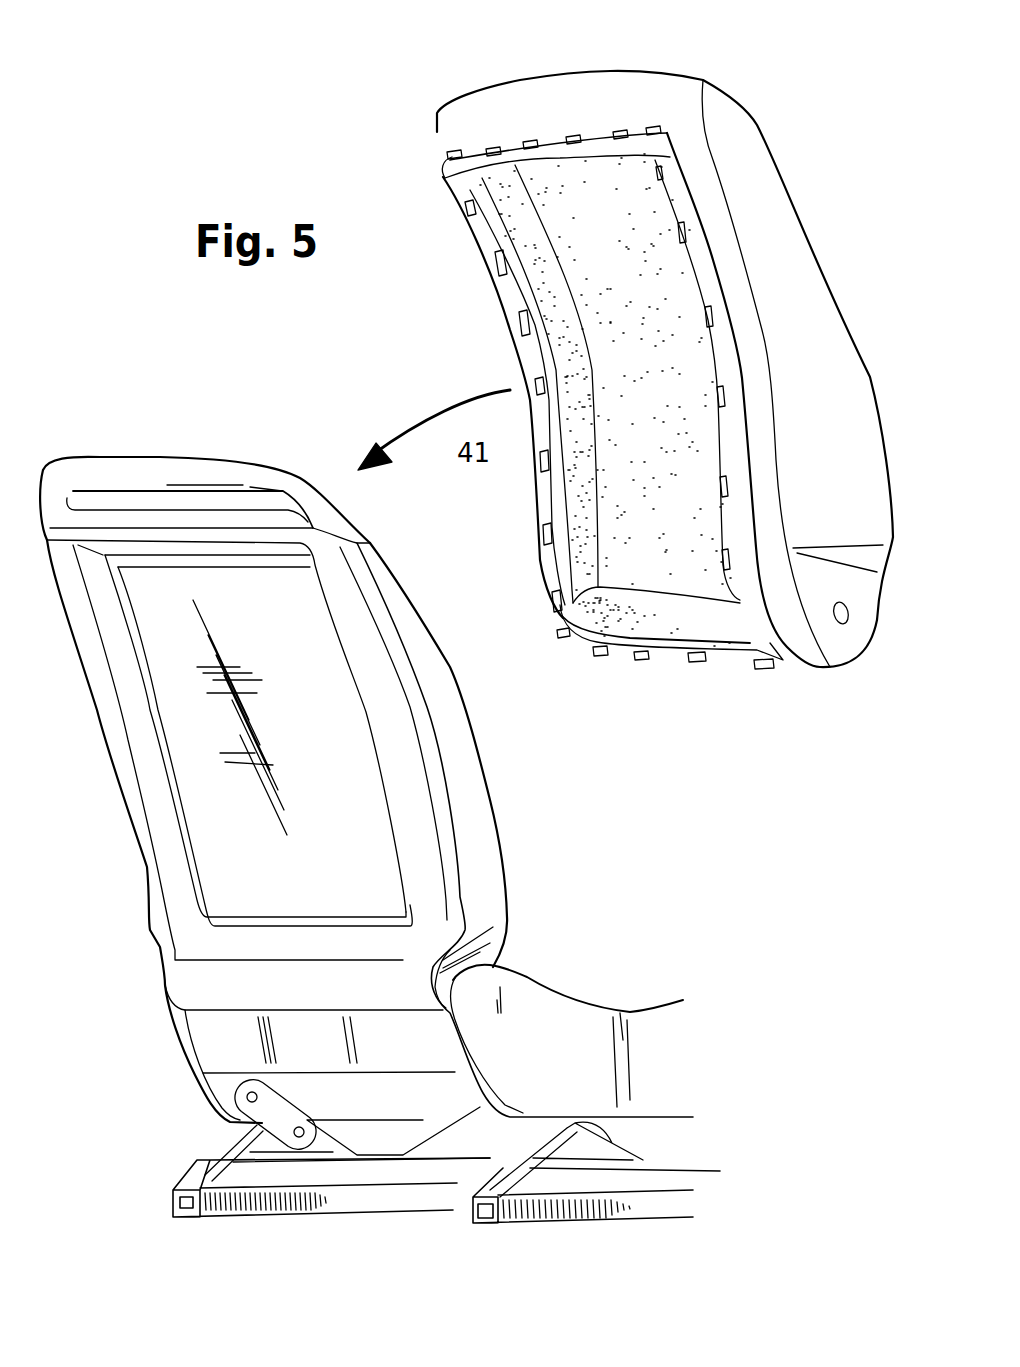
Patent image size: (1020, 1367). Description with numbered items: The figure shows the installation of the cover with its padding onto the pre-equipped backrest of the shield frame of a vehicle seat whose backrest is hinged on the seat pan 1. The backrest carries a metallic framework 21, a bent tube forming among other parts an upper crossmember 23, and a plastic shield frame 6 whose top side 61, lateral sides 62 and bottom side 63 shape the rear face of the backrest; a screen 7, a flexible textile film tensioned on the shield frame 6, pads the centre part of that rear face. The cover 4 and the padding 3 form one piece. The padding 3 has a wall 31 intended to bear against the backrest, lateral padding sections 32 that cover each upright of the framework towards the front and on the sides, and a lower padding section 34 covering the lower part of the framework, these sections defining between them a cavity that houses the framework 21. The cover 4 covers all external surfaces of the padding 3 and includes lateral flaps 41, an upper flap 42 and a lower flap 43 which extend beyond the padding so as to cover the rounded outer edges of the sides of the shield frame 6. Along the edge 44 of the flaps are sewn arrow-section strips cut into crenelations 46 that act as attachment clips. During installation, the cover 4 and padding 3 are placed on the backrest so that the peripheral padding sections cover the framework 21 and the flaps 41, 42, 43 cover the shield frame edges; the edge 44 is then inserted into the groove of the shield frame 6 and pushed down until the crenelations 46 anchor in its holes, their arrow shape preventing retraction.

The seat pan 1 is at (593, 1030).
The padding 3 is at (695, 400).
The cover 4 is at (773, 260).
The shield frame 6 is at (427, 873).
The screen 7 is at (230, 813).
The metallic framework 21 is at (320, 517).
The upper crossmember 23 is at (110, 473).
The wall 31 is at (665, 367).
The lateral padding sections 32 is at (555, 293).
The lower padding section 34 is at (645, 623).
The lateral flaps 41 is at (747, 418).
The upper flap 42 is at (610, 155).
The lower flap 43 is at (660, 650).
The edge of the flaps 44 is at (558, 120).
The crenelations 46 is at (678, 222).
The top side 61 is at (145, 520).
The lateral sides 62 is at (413, 793).
The bottom side 63 is at (268, 942).